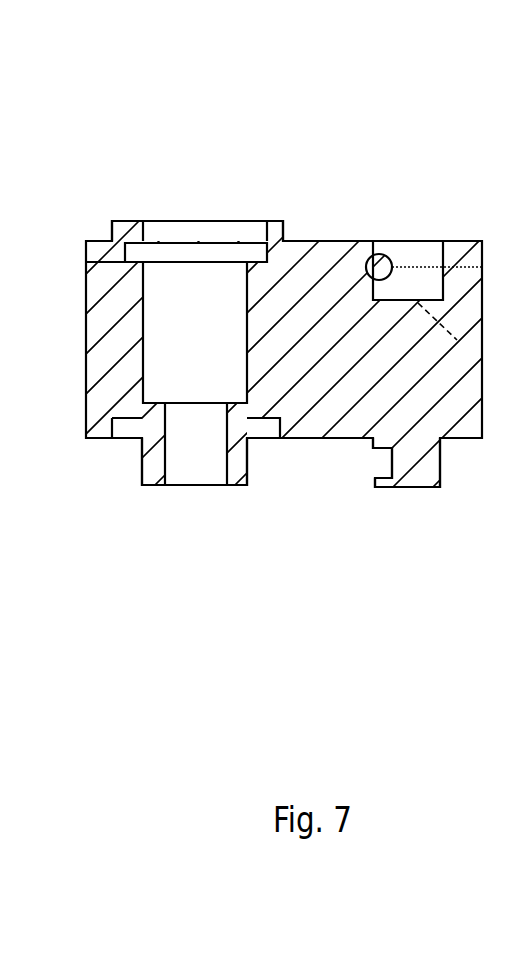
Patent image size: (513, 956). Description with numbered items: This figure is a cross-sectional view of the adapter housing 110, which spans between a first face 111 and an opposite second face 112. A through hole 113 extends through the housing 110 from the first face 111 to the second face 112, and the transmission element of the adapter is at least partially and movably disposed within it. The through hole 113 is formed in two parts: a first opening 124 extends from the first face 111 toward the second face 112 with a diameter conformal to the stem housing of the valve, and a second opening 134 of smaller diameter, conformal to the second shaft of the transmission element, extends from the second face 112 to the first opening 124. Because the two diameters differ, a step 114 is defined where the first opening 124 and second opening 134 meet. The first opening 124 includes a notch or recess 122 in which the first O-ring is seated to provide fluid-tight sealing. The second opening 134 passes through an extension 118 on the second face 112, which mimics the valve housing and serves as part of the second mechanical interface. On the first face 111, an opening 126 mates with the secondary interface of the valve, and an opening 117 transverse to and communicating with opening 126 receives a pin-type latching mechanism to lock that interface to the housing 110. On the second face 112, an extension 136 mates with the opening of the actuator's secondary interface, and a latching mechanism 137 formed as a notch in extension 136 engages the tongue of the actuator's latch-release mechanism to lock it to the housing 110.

The adapter housing 110 is at (330, 292).
The first face 111 is at (243, 178).
The second face 112 is at (322, 533).
The through hole 113 is at (213, 359).
The step 114 is at (153, 398).
The opening 117 is at (372, 252).
The extension 118 is at (138, 450).
The notch or recess 122 is at (137, 250).
The first opening 124 is at (240, 231).
The opening 126 is at (411, 262).
The second opening 134 is at (218, 465).
The extension 136 is at (433, 491).
The latching mechanism 137 is at (373, 466).